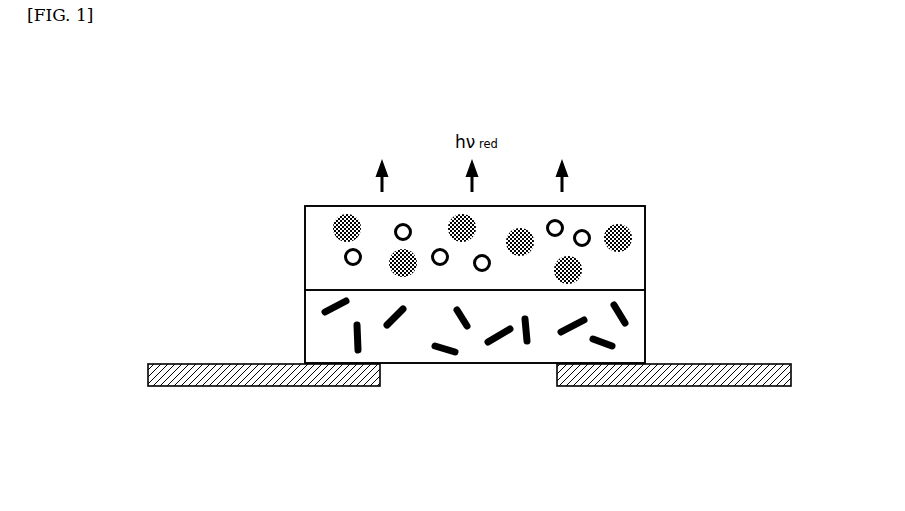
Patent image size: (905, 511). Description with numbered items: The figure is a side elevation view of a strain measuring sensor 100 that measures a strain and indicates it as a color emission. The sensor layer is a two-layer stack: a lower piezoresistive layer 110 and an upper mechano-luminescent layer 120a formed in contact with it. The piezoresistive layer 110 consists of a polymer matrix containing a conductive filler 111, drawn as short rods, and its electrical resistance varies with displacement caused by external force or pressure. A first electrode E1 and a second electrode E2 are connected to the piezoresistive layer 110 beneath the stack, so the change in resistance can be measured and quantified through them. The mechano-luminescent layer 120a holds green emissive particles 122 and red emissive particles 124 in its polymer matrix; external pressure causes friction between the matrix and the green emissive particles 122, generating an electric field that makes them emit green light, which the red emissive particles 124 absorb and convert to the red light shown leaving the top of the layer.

The strain measuring sensor 100 is at (215, 181).
The piezoresistive layer 110 is at (637, 315).
The conductive filler 111 is at (500, 340).
The mechano-luminescent layer 120a is at (628, 262).
The green emissive particles 122 is at (628, 229).
The red emissive particles 124 is at (583, 230).
The first electrode E1 is at (170, 378).
The second electrode E2 is at (763, 380).